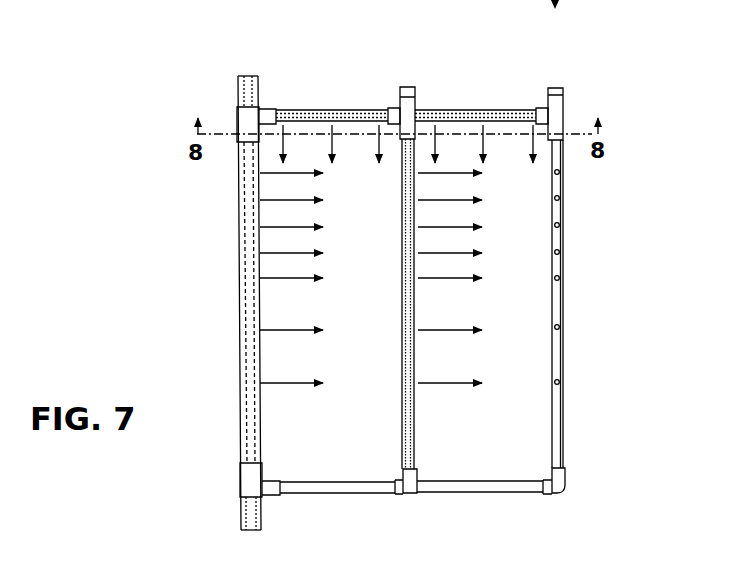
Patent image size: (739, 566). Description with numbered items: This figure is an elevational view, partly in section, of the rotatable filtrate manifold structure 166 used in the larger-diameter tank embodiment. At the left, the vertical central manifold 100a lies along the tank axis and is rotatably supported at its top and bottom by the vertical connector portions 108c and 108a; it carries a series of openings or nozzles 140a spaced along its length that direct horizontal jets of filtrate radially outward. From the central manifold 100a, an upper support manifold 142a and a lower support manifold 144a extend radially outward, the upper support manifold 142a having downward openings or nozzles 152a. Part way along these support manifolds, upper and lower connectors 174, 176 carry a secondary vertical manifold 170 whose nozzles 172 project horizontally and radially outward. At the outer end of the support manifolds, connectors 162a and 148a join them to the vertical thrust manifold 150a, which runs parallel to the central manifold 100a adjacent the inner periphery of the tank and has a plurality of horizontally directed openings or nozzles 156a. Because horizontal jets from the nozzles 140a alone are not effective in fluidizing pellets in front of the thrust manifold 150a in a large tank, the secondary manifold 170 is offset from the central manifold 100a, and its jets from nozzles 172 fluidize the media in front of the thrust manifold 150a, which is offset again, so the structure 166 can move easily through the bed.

The rotatable filtrate manifold structure 166 is at (275, 51).
The central manifold 100a is at (239, 283).
The vertical portion of upper central manifold connector 108c is at (238, 98).
The vertical portion of lower central manifold connector 108a is at (242, 514).
The upper support manifold 142a is at (326, 110).
The lower support manifold 144a is at (323, 495).
The upper connector 174 is at (415, 96).
The upper connector of thrust manifold 162a is at (563, 95).
The connector 148a is at (563, 480).
The lower connector 176 is at (411, 494).
The secondary vertical manifold 170 is at (402, 313).
The thrust manifold 150a is at (558, 309).
The horizontally directed openings or nozzles 156a is at (560, 278).
The downward openings or nozzles 152a is at (378, 122).
The openings or nozzles 140a is at (261, 331).
The nozzles 172 is at (416, 278).